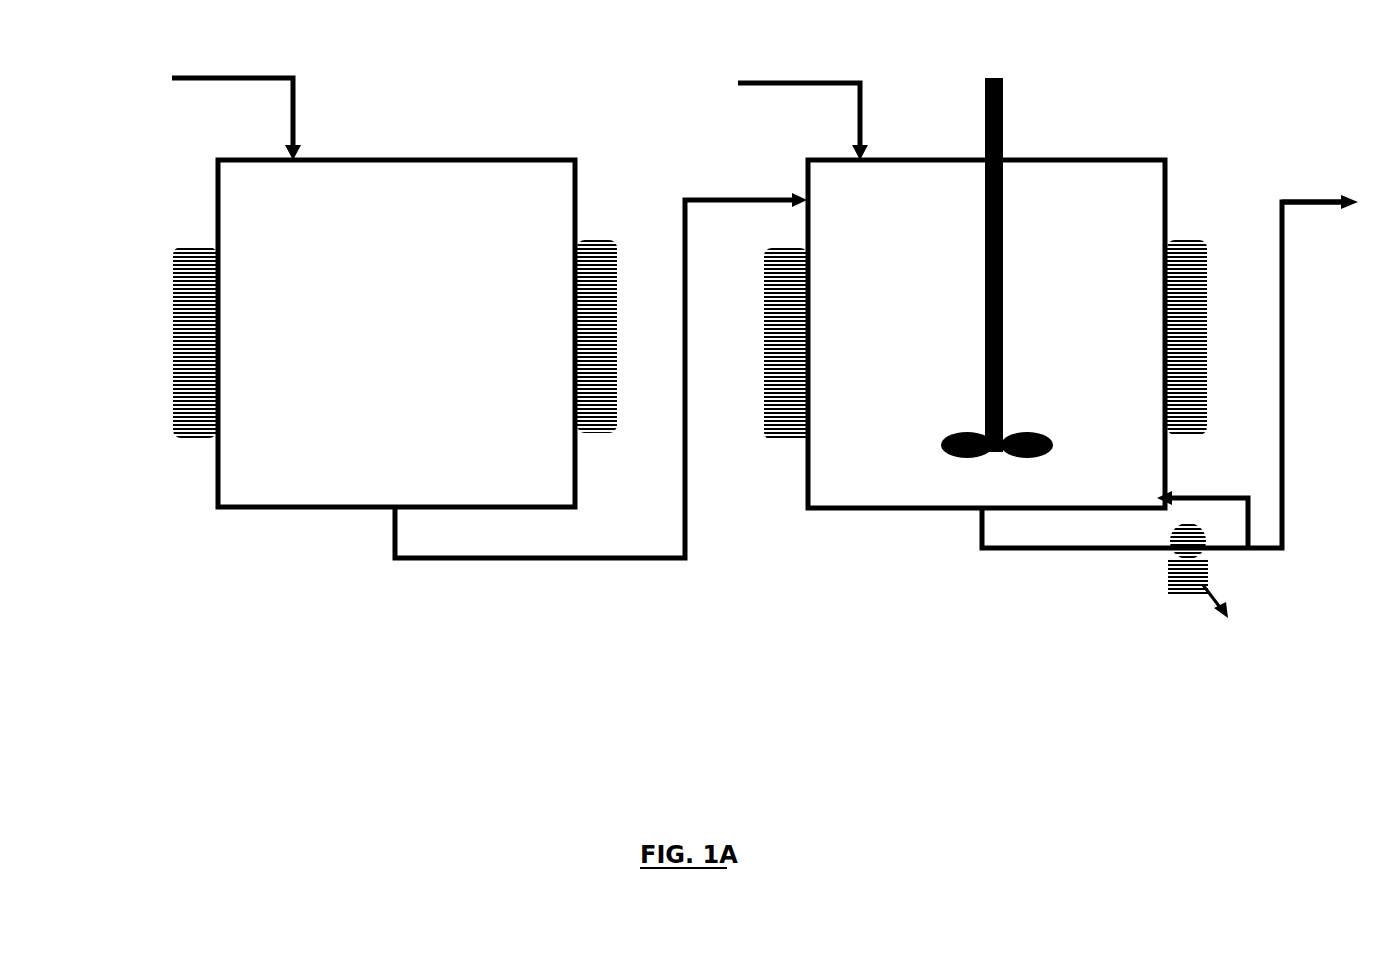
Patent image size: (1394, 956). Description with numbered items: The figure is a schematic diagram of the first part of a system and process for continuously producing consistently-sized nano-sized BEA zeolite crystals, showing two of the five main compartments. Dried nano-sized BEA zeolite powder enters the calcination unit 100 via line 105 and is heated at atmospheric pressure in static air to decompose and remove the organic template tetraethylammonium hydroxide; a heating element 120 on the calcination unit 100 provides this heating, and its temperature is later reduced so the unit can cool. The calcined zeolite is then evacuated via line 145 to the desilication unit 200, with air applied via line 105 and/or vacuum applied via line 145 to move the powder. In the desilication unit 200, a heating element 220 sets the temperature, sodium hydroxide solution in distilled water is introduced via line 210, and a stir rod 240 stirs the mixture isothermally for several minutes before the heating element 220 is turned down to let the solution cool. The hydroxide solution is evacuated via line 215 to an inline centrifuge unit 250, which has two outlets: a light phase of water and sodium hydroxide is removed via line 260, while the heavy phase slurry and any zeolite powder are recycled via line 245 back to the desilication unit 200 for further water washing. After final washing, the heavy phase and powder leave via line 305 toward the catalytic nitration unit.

The calcination unit 100 is at (396, 456).
The line 105 is at (218, 88).
The heating element 120 is at (173, 382).
The line 145 is at (450, 572).
The desilication unit 200 is at (986, 456).
The line 210 is at (787, 82).
The line 215 is at (1060, 557).
The heating element 220 is at (777, 387).
The stir rod 240 is at (997, 229).
The line 245 is at (1215, 498).
The inline centrifuge unit 250 is at (1180, 596).
The line 260 is at (1230, 607).
The line 305 is at (1306, 181).